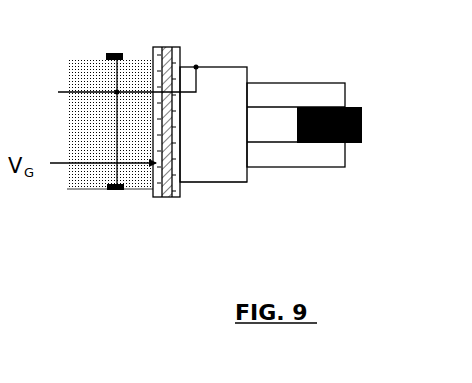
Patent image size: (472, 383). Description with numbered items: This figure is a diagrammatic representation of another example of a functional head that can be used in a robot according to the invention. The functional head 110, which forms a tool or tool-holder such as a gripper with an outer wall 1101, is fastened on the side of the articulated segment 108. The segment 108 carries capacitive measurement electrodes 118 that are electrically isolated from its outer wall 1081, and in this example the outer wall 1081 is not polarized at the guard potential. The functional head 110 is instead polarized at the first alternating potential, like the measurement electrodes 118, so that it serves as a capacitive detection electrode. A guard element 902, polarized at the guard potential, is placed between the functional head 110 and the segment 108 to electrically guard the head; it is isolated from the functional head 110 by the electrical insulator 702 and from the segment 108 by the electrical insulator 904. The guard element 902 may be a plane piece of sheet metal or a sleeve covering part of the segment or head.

The segment 108 is at (98, 130).
The outer wall of the segment 1081 is at (78, 191).
The measurement electrode 118 is at (115, 53).
The electrical insulator 904 is at (157, 198).
The guard element 902 is at (168, 198).
The electrical insulator 702 is at (182, 52).
The functional head 110 is at (259, 68).
The outer wall of the functional head 1101 is at (228, 183).